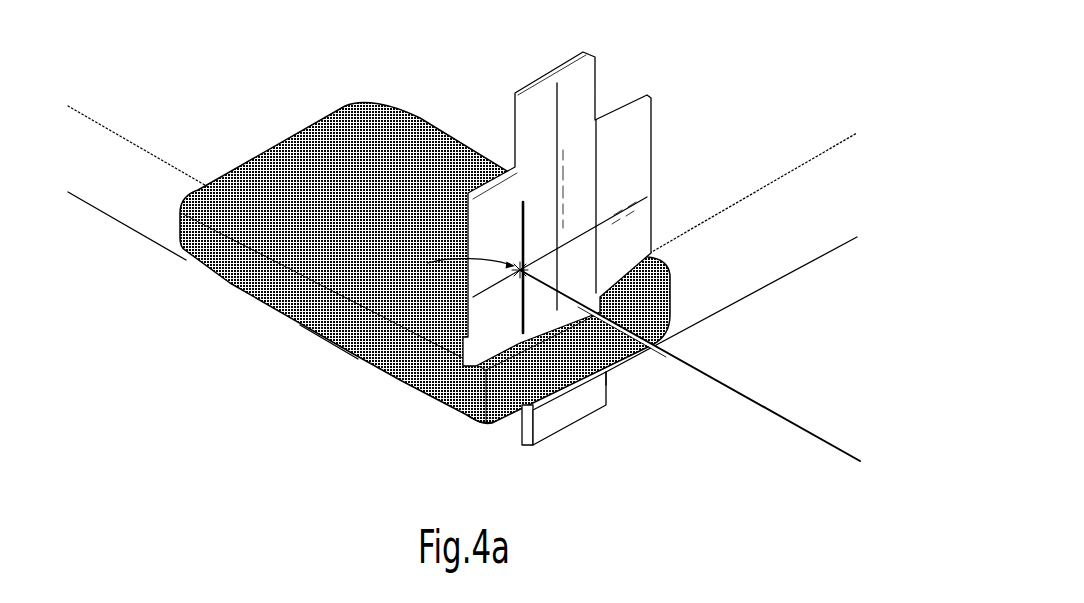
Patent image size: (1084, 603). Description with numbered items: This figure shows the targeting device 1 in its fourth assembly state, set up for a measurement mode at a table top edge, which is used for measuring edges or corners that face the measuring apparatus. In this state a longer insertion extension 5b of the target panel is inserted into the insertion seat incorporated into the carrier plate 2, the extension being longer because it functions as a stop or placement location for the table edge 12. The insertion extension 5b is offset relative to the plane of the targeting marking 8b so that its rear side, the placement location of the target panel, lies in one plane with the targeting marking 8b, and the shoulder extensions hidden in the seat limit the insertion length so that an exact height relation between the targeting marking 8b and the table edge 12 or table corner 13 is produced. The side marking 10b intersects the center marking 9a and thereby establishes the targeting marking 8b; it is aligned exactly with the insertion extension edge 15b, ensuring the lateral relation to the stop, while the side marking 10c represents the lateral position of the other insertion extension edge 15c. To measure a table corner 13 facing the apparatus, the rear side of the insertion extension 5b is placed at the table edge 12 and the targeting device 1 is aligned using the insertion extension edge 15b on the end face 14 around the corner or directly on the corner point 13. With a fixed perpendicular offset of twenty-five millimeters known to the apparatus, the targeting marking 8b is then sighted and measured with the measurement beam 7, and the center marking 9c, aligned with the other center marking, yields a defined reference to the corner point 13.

The targeting device 1 is at (464, 273).
The carrier plate 2 is at (263, 302).
The insertion extension 5b is at (580, 407).
The measurement beam 7 is at (737, 395).
The targeting marking 8b is at (358, 360).
The center marking 9a is at (550, 245).
The center marking 9c is at (562, 106).
The side marking 10b is at (522, 225).
The side marking 10c is at (598, 176).
The table edge 12 is at (733, 204).
The table corner 13 is at (487, 424).
The end face 14 is at (160, 205).
The insertion extension edge 15b is at (516, 428).
The insertion extension edge 15c is at (612, 386).